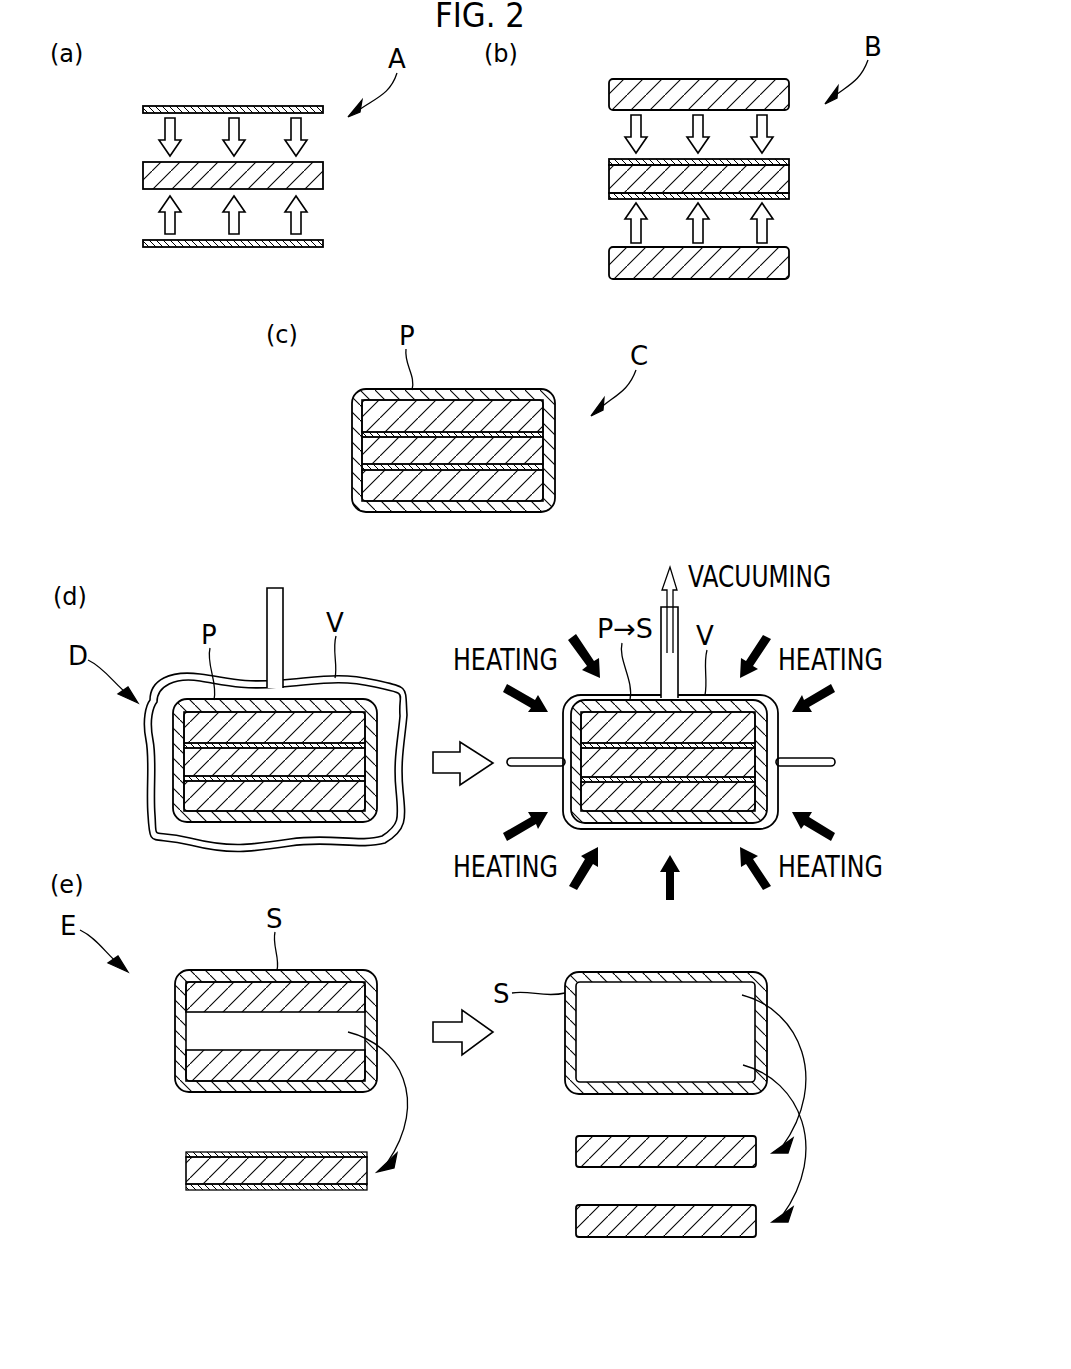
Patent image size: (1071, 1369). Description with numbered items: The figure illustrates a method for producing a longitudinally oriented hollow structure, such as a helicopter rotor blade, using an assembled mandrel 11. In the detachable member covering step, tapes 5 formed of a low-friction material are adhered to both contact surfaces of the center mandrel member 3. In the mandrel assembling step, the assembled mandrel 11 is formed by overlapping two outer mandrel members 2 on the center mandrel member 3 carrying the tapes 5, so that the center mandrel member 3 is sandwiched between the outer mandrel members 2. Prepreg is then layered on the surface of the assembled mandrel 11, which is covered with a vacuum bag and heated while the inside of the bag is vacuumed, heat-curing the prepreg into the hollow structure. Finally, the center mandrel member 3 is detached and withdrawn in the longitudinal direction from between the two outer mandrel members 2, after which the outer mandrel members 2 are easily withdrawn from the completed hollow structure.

The outer mandrel member 2 is at (618, 99).
The center mandrel member 3 is at (155, 176).
The tape 5 is at (146, 107).
The assembled mandrel 11 is at (558, 72).